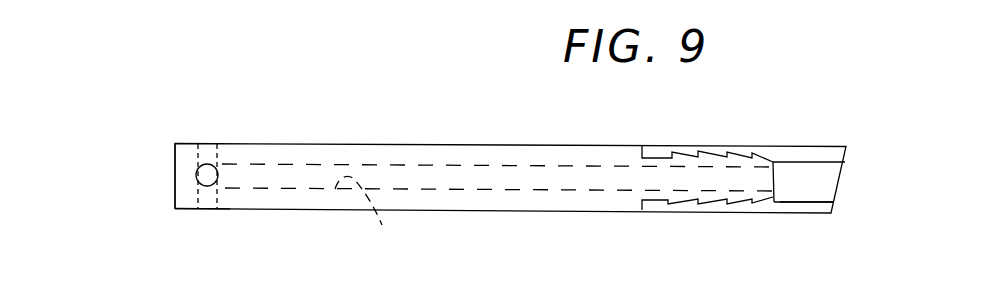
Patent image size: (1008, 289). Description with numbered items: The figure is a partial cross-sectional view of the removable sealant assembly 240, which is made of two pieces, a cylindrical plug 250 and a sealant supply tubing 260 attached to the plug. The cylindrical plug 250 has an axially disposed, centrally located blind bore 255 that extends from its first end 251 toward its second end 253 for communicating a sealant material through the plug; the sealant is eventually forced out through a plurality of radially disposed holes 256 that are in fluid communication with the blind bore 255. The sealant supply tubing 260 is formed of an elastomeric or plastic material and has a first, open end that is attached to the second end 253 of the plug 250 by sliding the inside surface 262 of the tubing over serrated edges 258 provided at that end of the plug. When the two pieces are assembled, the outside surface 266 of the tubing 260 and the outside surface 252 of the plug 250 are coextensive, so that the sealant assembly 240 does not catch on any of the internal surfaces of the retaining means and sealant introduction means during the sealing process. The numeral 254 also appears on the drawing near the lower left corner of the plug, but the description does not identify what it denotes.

The removable sealant assembly 240 is at (338, 122).
The cylindrical plug 250 is at (498, 153).
The first end 251 is at (156, 167).
The outside surface of plug 252 is at (186, 139).
The second end 253 is at (780, 203).
The bottom edge 254 is at (167, 204).
The blind bore 255 is at (373, 216).
The radially disposed holes 256 is at (216, 183).
The serrated edges 258 is at (665, 213).
The sealant supply tubing 260 is at (802, 206).
The inside surface of tubing 262 is at (828, 170).
The outside surface of tubing 266 is at (809, 191).